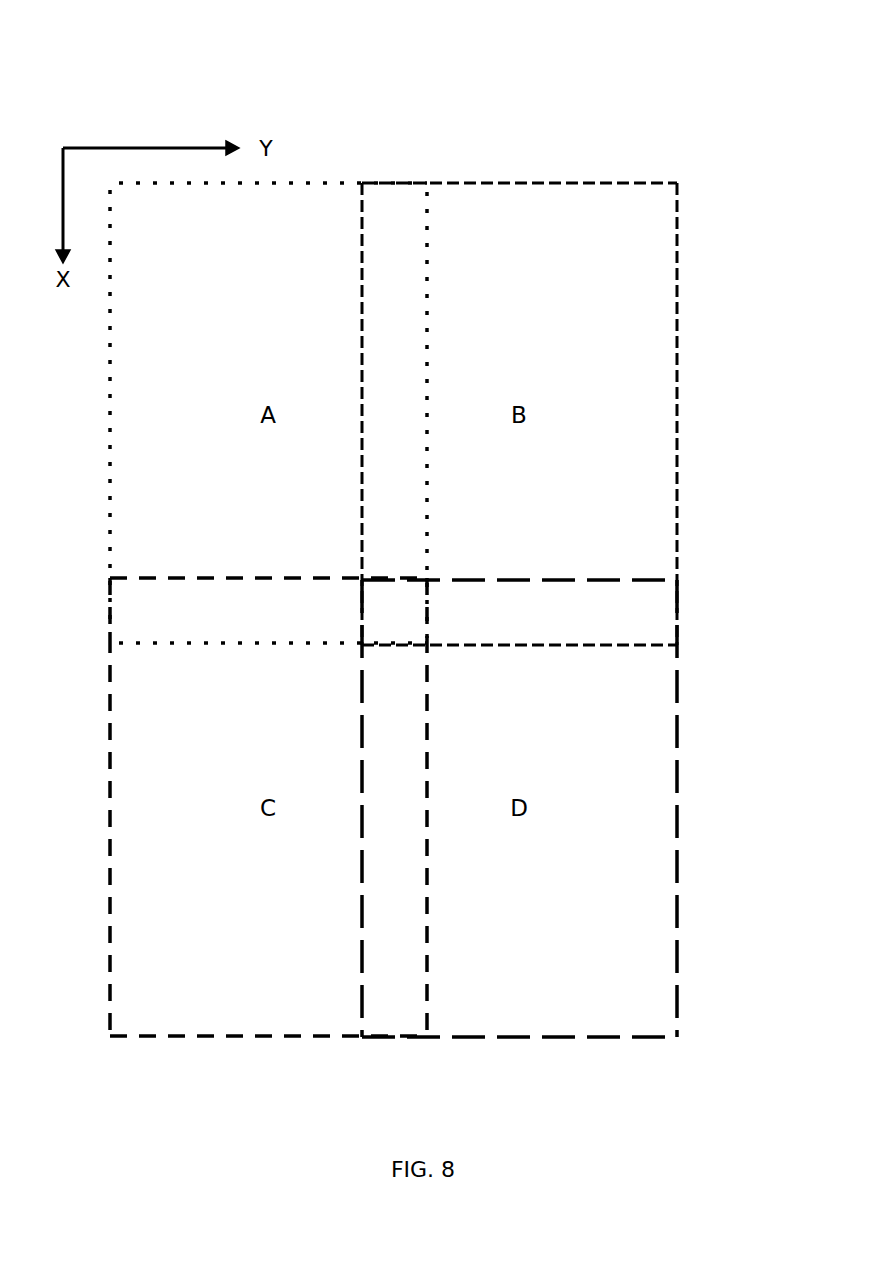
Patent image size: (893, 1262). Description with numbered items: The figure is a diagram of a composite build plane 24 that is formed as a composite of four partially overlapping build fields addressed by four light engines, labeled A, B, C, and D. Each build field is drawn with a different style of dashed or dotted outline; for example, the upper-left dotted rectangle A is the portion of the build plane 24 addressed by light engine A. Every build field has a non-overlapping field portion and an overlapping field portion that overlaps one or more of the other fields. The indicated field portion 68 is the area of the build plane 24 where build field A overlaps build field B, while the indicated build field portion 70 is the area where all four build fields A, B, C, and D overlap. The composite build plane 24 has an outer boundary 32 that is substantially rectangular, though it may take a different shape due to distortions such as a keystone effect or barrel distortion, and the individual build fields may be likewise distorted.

The composite build plane 24 is at (527, 78).
The outer boundary 32 is at (570, 183).
The field portion 68 is at (389, 200).
The build field portion 70 is at (408, 619).